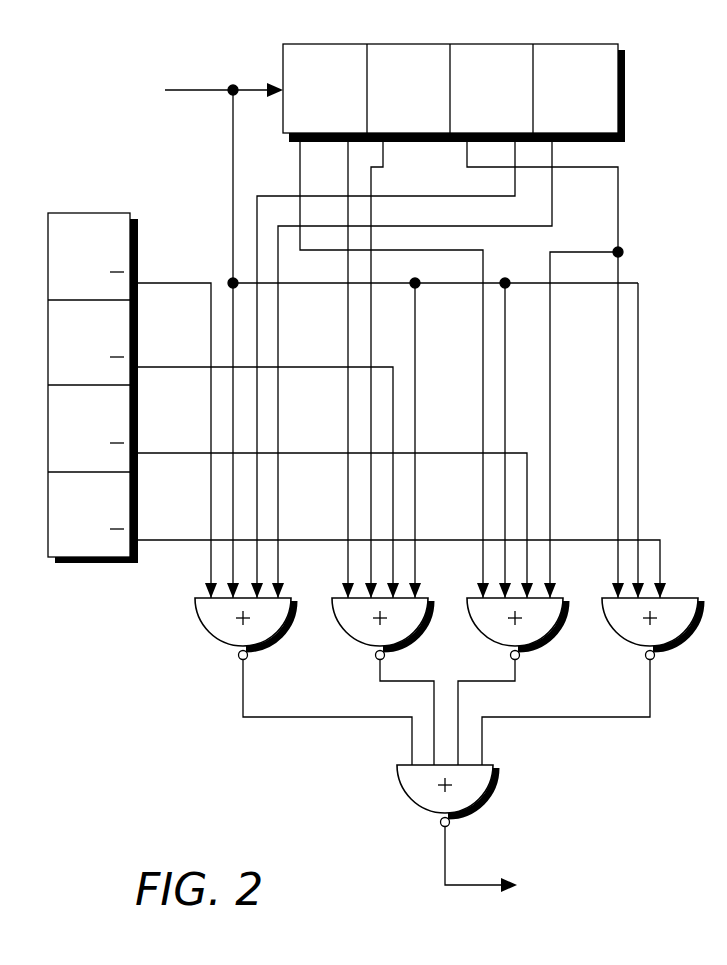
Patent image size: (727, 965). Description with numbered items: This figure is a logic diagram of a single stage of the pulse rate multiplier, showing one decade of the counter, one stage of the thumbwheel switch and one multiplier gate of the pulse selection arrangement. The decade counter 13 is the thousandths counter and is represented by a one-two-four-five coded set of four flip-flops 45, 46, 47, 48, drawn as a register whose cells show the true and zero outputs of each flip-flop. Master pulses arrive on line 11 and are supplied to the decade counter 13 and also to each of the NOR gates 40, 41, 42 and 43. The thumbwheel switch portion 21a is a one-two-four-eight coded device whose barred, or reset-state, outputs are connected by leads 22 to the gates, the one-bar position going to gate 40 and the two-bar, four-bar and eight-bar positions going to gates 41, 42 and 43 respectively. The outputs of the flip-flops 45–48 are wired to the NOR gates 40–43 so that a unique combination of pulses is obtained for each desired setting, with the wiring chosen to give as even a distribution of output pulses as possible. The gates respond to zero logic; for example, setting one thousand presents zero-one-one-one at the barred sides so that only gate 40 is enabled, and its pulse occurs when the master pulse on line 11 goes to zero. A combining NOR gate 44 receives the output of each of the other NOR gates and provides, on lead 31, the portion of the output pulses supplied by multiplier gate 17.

The master pulse line 11 is at (196, 90).
The decade counter 13 is at (462, 303).
The flip-flop 45 is at (330, 44).
The flip-flop 46 is at (403, 44).
The flip-flop 47 is at (478, 44).
The flip-flop 48 is at (562, 44).
The thumbwheel switch portion 21a is at (82, 563).
The leads 22 is at (163, 283).
The NOR gate 40 is at (217, 638).
The NOR gate 41 is at (356, 640).
The NOR gate 42 is at (535, 648).
The NOR gate 43 is at (670, 648).
The multiplier gate 17 is at (462, 662).
The combining NOR gate 44 is at (480, 805).
The output lead 31 is at (478, 888).